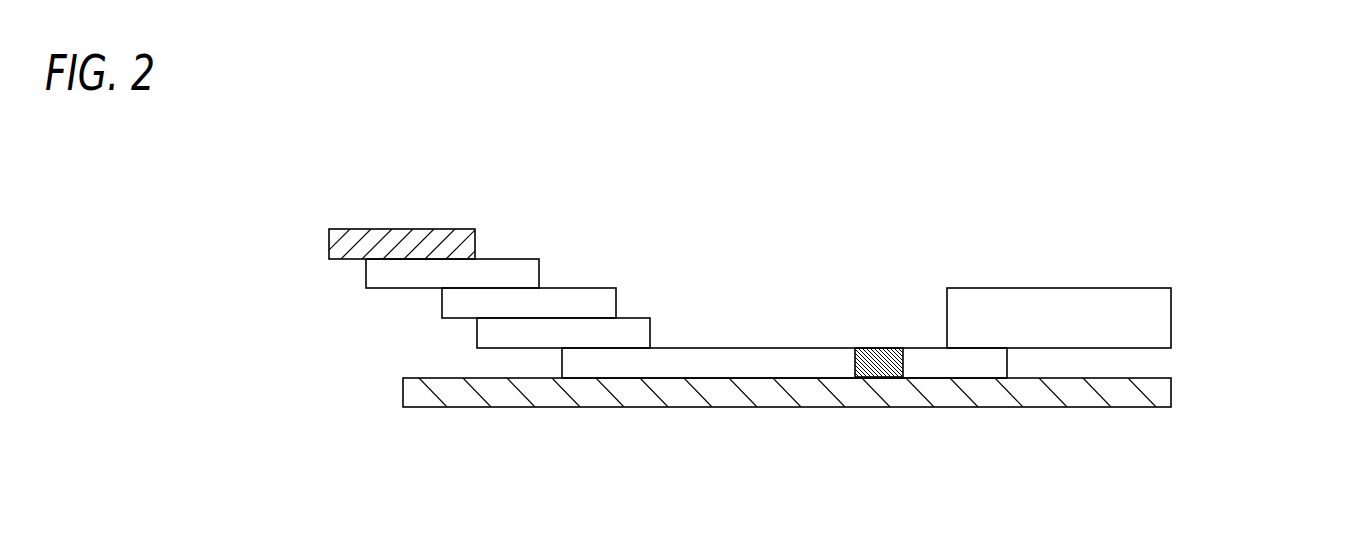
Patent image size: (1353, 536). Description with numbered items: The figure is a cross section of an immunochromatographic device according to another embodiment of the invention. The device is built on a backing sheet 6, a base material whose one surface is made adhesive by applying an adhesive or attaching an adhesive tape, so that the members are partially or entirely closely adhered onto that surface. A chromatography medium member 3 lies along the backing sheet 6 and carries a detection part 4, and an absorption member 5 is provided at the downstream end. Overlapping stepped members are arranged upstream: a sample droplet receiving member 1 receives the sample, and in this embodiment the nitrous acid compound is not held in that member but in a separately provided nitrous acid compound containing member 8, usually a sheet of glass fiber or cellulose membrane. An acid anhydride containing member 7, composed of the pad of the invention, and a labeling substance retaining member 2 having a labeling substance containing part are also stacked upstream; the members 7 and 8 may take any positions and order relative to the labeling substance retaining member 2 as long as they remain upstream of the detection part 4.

The sample droplet receiving member 1 is at (402, 243).
The labeling substance retaining member 2 is at (633, 330).
The chromatography medium member 3 is at (757, 363).
The detection part 4 is at (879, 363).
The absorption member 5 is at (1060, 305).
The backing sheet 6 is at (1158, 393).
The acid anhydride containing member 7 is at (584, 302).
The nitrous acid compound containing member 8 is at (504, 270).